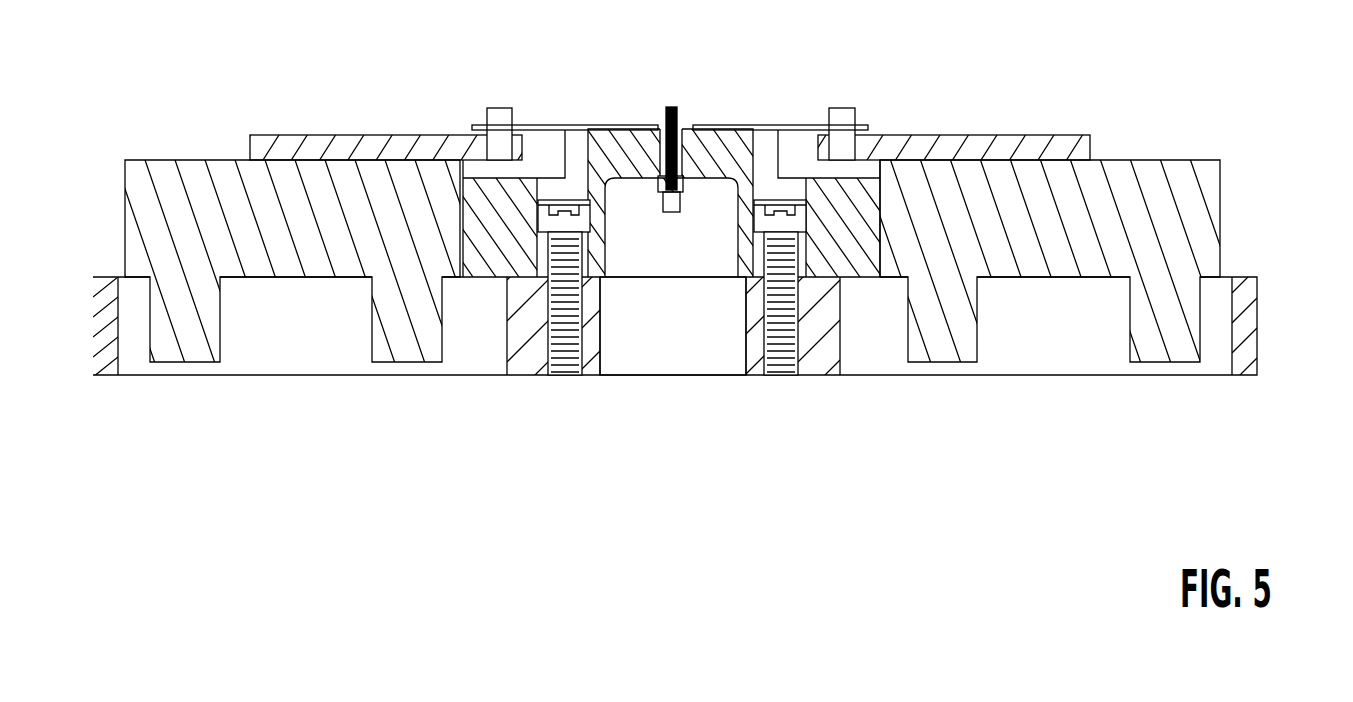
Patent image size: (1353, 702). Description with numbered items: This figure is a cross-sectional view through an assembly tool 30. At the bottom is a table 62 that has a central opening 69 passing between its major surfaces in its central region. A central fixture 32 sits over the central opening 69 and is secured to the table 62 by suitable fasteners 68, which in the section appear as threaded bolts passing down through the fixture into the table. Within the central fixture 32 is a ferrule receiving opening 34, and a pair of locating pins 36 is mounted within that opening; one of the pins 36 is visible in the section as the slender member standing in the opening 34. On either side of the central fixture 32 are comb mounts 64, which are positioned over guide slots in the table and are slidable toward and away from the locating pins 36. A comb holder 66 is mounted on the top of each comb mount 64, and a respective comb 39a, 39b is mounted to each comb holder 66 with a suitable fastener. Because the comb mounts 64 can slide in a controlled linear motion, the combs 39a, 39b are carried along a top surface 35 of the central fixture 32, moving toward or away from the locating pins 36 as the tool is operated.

The assembly tool 30 is at (120, 140).
The central fixture 32 is at (697, 127).
The ferrule receiving opening 34 is at (685, 125).
The top surface 35 is at (650, 125).
The locating pins 36 is at (670, 107).
The comb 39a is at (800, 125).
The comb 39b is at (538, 126).
The table 62 is at (1257, 352).
The comb mounts 64 is at (200, 160).
The comb holder 66 is at (298, 133).
The fasteners 68 is at (565, 375).
The central opening 69 is at (692, 339).